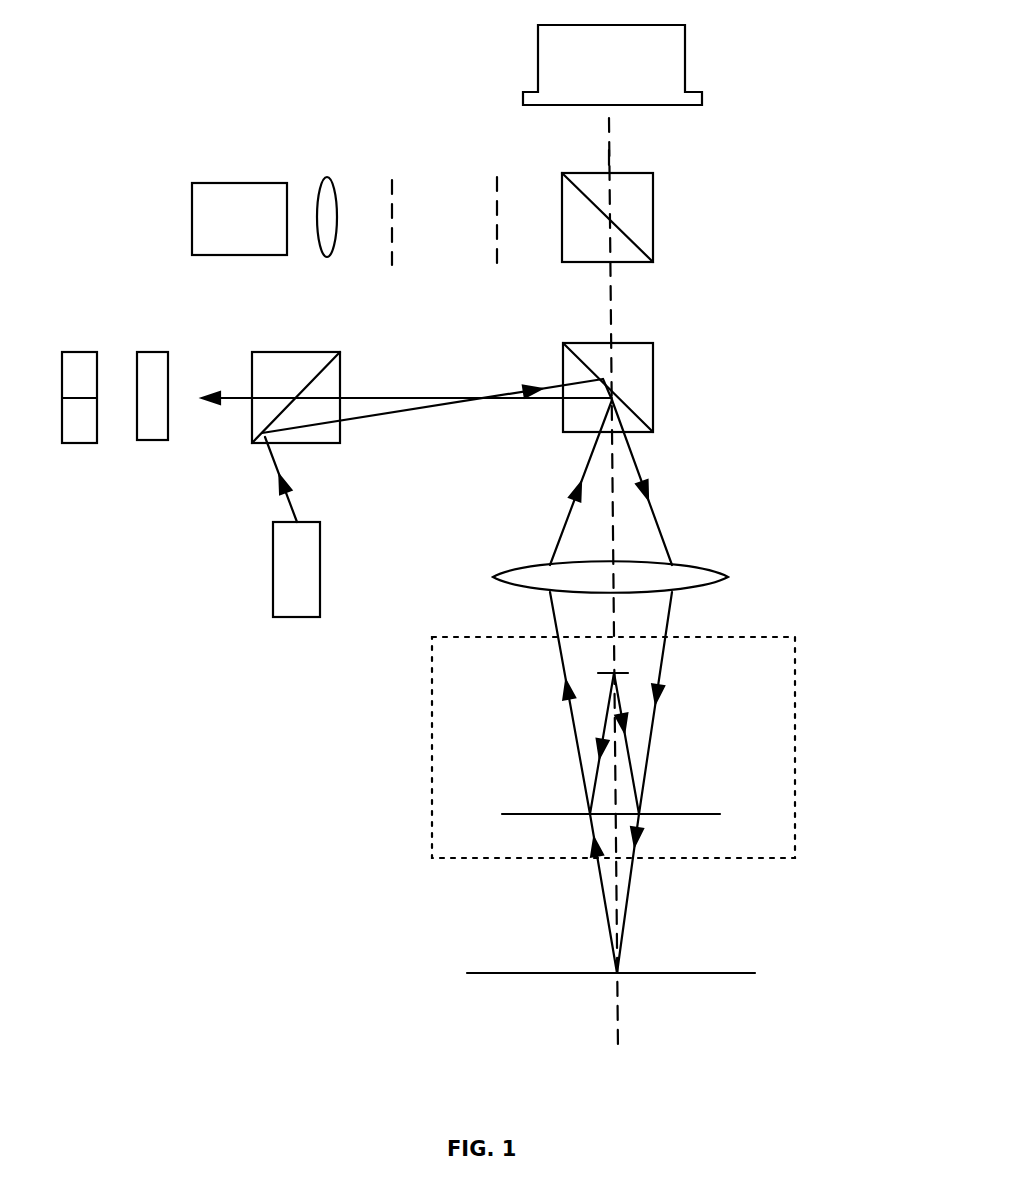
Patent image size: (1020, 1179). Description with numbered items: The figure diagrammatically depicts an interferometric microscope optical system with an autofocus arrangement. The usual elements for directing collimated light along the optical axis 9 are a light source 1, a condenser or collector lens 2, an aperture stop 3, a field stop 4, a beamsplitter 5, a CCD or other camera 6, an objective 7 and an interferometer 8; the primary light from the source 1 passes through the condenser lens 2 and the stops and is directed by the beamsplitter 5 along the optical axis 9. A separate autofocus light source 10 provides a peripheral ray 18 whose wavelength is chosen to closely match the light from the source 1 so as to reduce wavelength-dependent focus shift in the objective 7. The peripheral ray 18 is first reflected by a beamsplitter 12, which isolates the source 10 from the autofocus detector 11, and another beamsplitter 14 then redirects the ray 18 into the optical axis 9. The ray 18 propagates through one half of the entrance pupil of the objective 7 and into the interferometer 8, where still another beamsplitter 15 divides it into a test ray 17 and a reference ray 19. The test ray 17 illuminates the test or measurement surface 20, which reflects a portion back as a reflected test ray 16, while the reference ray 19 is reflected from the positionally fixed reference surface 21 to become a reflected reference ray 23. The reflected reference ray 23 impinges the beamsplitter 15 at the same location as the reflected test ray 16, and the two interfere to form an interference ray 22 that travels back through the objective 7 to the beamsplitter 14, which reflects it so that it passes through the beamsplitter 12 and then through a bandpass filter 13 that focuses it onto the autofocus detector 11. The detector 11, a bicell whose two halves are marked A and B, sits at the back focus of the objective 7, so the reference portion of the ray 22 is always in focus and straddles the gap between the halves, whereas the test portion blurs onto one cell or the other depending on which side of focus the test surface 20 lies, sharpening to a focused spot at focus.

The light source 1 is at (239, 219).
The condenser lens 2 is at (338, 222).
The aperture stop 3 is at (395, 213).
The field stop 4 is at (497, 214).
The beamsplitter 5 is at (653, 215).
The camera 6 is at (612, 65).
The objective 7 is at (700, 590).
The interferometer 8 is at (796, 730).
The optical axis 9 is at (609, 160).
The autofocus light source 10 is at (272, 560).
The autofocus detector 11 is at (62, 378).
The beamsplitter 12 is at (285, 352).
The bandpass filter 13 is at (170, 415).
The beamsplitter 14 is at (653, 383).
The beamsplitter 15 is at (690, 815).
The reflected test ray 16 is at (600, 898).
The test ray 17 is at (632, 876).
The peripheral ray 18 is at (408, 405).
The reference ray 19 is at (632, 757).
The test surface 20 is at (703, 975).
The reference surface 21 is at (620, 671).
The interference ray 22 is at (578, 752).
The reflected reference ray 23 is at (602, 747).